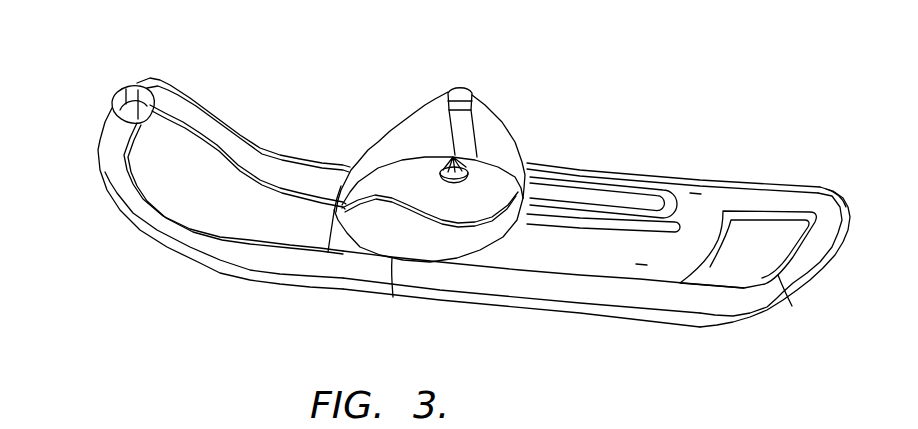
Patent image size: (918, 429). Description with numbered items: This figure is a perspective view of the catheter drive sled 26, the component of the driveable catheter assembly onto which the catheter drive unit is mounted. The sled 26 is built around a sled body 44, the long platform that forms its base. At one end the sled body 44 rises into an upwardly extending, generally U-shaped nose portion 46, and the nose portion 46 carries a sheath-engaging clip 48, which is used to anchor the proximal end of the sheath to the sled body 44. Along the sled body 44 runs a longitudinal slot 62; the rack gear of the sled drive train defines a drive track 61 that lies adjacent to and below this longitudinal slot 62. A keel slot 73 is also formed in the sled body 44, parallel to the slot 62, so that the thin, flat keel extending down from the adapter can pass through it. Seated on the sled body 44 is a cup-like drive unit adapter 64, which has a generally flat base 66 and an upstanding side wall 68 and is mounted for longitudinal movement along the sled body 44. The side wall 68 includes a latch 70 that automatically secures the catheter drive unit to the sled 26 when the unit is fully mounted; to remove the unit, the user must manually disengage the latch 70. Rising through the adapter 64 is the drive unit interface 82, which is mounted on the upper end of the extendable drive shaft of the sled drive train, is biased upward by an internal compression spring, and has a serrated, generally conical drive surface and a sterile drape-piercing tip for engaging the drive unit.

The catheter drive sled 26 is at (598, 74).
The sled body 44 is at (623, 171).
The nose portion 46 is at (190, 111).
The sheath-engaging clip 48 is at (120, 92).
The drive track 61 is at (566, 191).
The longitudinal slot 62 is at (652, 194).
The drive unit adapter 64 is at (421, 121).
The base 66 is at (478, 205).
The side wall 68 is at (493, 141).
The latch 70 is at (464, 91).
The keel slot 73 is at (584, 227).
The drive unit interface 82 is at (470, 146).